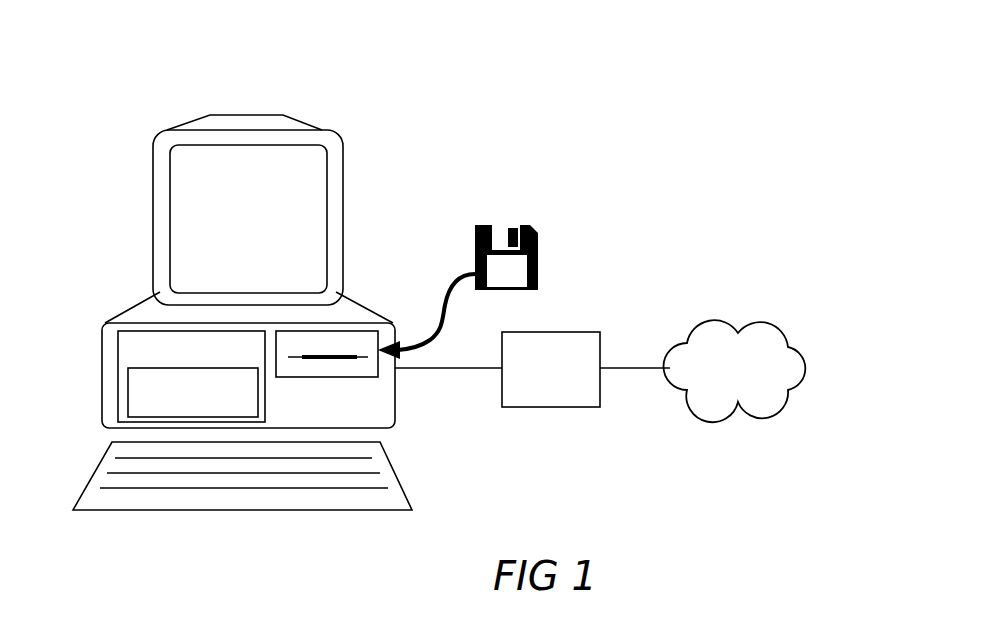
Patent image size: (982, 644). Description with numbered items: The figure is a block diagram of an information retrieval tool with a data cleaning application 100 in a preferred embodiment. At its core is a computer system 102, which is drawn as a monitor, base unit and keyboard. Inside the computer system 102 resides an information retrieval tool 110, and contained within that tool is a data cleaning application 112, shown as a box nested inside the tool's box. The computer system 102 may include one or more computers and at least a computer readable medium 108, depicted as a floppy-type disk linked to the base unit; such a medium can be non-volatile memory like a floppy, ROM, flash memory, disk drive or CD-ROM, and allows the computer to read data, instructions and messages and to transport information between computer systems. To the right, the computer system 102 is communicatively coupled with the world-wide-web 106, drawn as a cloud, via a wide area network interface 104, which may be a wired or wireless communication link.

The information retrieval tool with a data cleaning application 100 is at (885, 66).
The computer system 102 is at (343, 222).
The wide area network interface 104 is at (600, 347).
The world-wide-web 106 is at (807, 352).
The computer readable medium 108 is at (538, 240).
The information retrieval tool 110 is at (127, 342).
The data cleaning application 112 is at (128, 380).